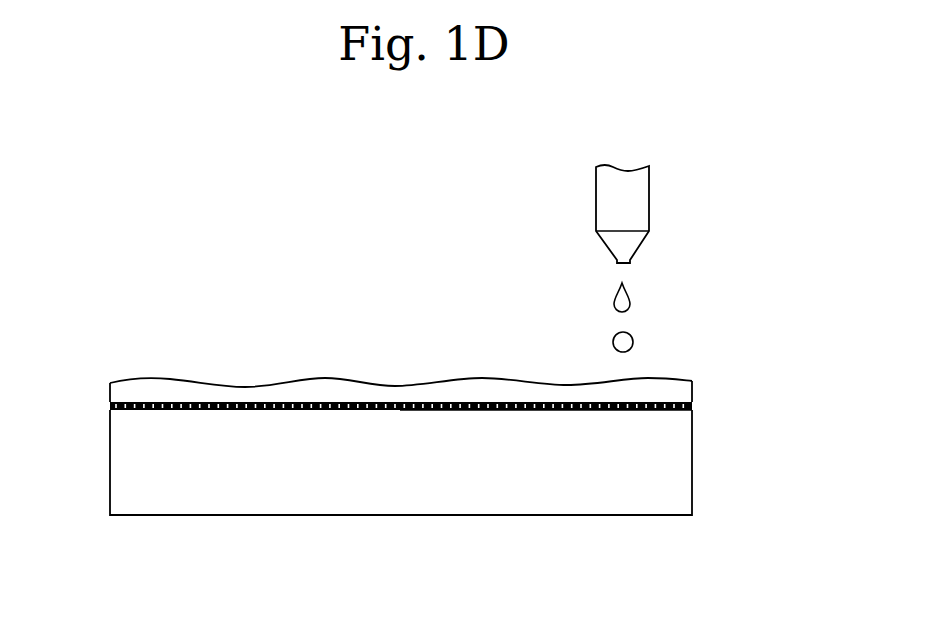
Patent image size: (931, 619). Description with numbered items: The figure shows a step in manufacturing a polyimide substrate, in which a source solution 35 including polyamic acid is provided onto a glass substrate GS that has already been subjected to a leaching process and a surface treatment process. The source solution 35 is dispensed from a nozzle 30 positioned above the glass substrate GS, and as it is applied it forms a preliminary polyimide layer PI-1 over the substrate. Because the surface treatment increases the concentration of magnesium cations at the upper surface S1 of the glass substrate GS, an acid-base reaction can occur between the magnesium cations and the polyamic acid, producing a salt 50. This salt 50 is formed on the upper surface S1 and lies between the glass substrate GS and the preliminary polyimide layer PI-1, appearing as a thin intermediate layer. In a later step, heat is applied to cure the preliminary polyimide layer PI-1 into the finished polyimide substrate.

The nozzle 30 is at (643, 202).
The source solution 35 is at (630, 302).
The preliminary polyimide layer PI-1 is at (680, 393).
The salt 50 is at (694, 405).
The upper surface S1 is at (568, 409).
The glass substrate GS is at (680, 465).